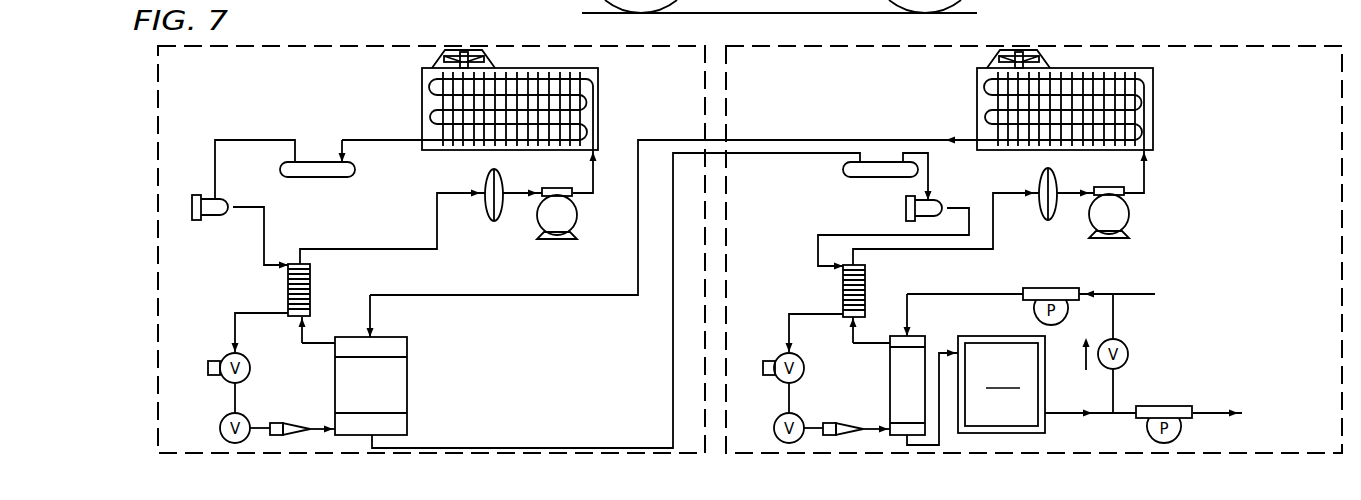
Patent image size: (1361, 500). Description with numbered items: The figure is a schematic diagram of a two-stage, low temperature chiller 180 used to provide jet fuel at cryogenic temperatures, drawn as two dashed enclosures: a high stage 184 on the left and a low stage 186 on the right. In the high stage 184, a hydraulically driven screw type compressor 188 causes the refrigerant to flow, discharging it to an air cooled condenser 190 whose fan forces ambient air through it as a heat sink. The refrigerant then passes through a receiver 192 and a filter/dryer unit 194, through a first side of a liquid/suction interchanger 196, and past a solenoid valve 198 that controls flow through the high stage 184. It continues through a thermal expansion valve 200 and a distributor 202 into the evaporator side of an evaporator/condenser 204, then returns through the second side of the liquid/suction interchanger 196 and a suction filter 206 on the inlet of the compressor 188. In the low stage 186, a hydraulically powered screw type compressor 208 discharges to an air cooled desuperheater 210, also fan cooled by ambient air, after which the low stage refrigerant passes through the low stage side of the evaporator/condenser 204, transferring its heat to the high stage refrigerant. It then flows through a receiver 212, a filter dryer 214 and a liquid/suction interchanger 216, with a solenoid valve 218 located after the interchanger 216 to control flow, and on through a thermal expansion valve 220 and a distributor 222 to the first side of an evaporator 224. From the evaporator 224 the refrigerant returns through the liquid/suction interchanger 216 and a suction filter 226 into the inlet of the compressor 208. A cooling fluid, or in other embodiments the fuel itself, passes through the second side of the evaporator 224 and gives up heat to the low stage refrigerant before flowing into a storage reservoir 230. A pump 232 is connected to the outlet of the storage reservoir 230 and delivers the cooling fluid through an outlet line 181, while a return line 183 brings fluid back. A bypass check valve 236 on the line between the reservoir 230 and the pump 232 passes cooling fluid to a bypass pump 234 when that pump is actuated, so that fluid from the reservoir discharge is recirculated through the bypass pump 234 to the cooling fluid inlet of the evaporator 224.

The low temperature chiller 180 is at (546, 28).
The outlet line 181 is at (1212, 413).
The return line 183 is at (1133, 294).
The high stage 184 is at (146, 104).
The low stage 186 is at (1230, 37).
The compressor 188 is at (575, 218).
The condenser 190 is at (465, 76).
The receiver 192 is at (305, 176).
The filter/dryer unit 194 is at (218, 212).
The liquid/suction interchanger 196 is at (288, 300).
The solenoid valve 198 is at (228, 355).
The thermal expansion valve 200 is at (222, 431).
The distributor 202 is at (290, 423).
The evaporator/condenser 204 is at (400, 398).
The suction filter 206 is at (492, 212).
The compressor 208 is at (1125, 218).
The air cooled desuperheater 210 is at (1098, 72).
The receiver 212 is at (858, 175).
The filter dryer 214 is at (903, 203).
The liquid/suction interchanger 216 is at (840, 295).
The solenoid valve 218 is at (783, 355).
The thermal expansion valve 220 is at (777, 428).
The distributor 222 is at (845, 424).
The evaporator 224 is at (898, 385).
The suction filter 226 is at (1040, 182).
The storage reservoir 230 is at (976, 390).
The pump 232 is at (1160, 406).
The bypass pump 234 is at (1053, 290).
The bypass check valve 236 is at (1125, 340).